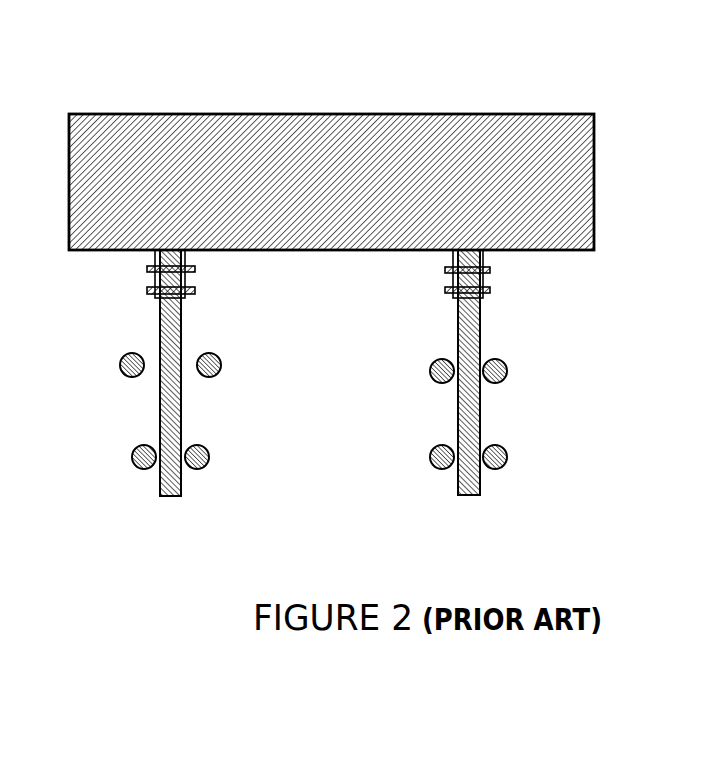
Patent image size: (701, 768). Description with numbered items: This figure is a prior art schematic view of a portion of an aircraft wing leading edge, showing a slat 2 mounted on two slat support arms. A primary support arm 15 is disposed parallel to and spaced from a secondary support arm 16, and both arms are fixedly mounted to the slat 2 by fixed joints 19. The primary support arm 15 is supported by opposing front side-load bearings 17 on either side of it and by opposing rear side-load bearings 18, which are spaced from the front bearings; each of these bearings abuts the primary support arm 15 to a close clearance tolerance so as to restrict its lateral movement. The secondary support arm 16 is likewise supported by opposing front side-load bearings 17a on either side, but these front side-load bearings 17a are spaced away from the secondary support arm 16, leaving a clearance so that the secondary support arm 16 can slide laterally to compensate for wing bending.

The slat 2 is at (344, 138).
The primary support arm 15 is at (480, 413).
The secondary support arm 16 is at (182, 407).
The front side-load bearings 17 is at (507, 369).
The front side-load bearings 17a is at (120, 364).
The rear side-load bearings 18 is at (507, 455).
The fixed joints 19 is at (150, 279).